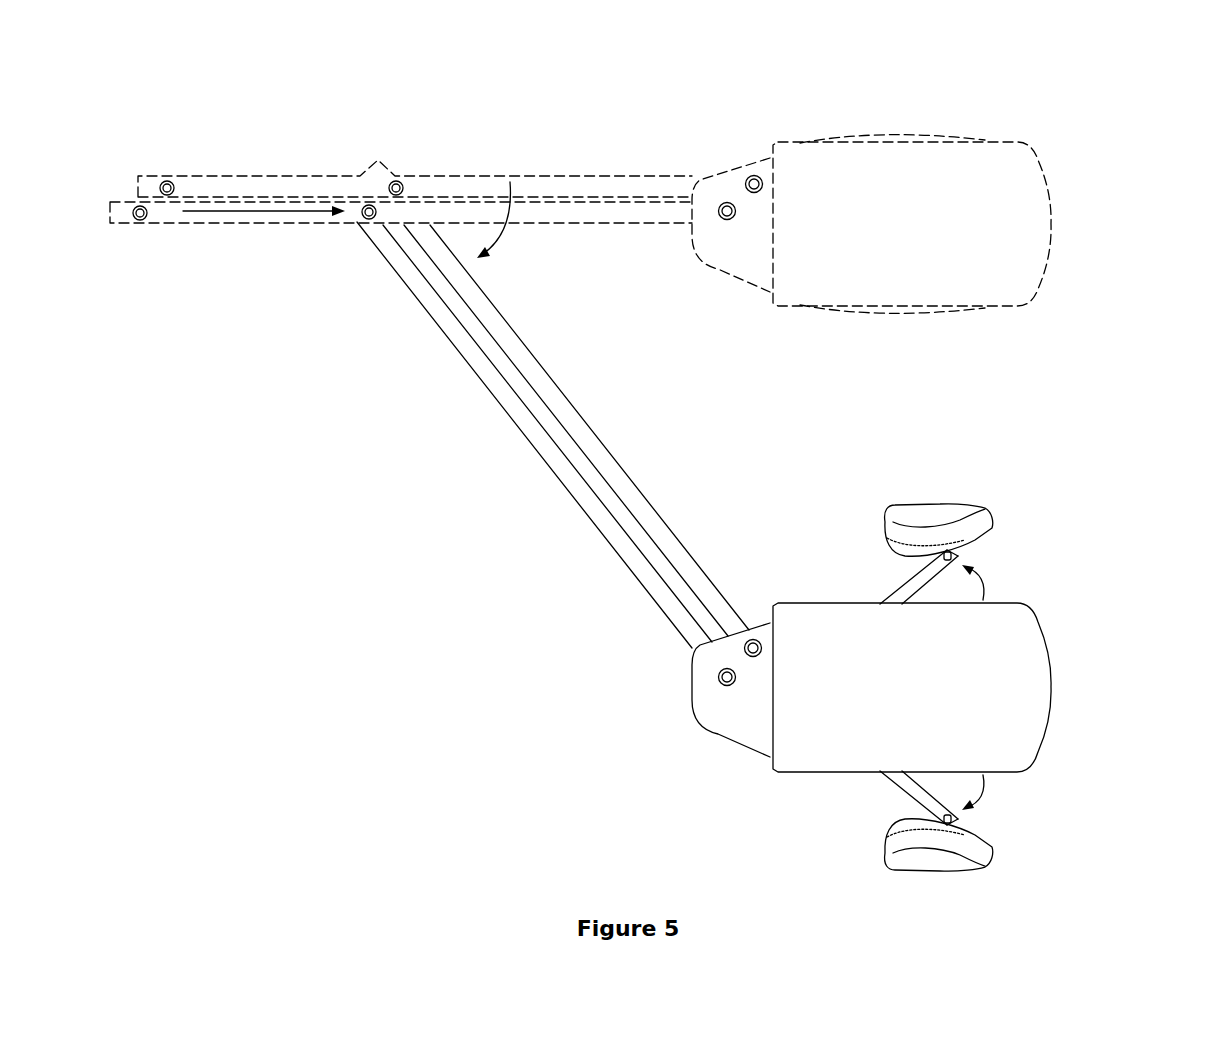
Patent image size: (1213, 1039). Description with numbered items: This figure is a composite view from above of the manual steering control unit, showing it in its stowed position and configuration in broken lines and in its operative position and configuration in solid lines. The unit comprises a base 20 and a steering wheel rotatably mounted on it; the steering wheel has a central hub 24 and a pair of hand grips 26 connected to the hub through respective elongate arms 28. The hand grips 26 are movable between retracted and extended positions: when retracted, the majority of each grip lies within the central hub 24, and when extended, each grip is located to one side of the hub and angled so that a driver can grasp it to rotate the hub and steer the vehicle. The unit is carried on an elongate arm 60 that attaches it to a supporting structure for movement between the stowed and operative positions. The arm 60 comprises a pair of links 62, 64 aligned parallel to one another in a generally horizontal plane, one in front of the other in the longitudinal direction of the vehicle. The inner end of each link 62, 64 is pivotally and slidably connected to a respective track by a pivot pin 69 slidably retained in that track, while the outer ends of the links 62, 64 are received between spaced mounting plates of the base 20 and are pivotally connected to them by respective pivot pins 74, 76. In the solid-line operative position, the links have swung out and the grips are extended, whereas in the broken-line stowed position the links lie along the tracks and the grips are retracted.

The base 20 is at (722, 253).
The central hub 24 is at (1038, 228).
The hand grips 26 is at (930, 510).
The elongate arms 28 is at (903, 590).
The elongate arm 60 is at (432, 559).
The link 62 is at (534, 212).
The link 64 is at (565, 185).
The pivot pin 69 is at (169, 182).
The pivot pin 74 is at (724, 204).
The pivot pin 76 is at (757, 180).